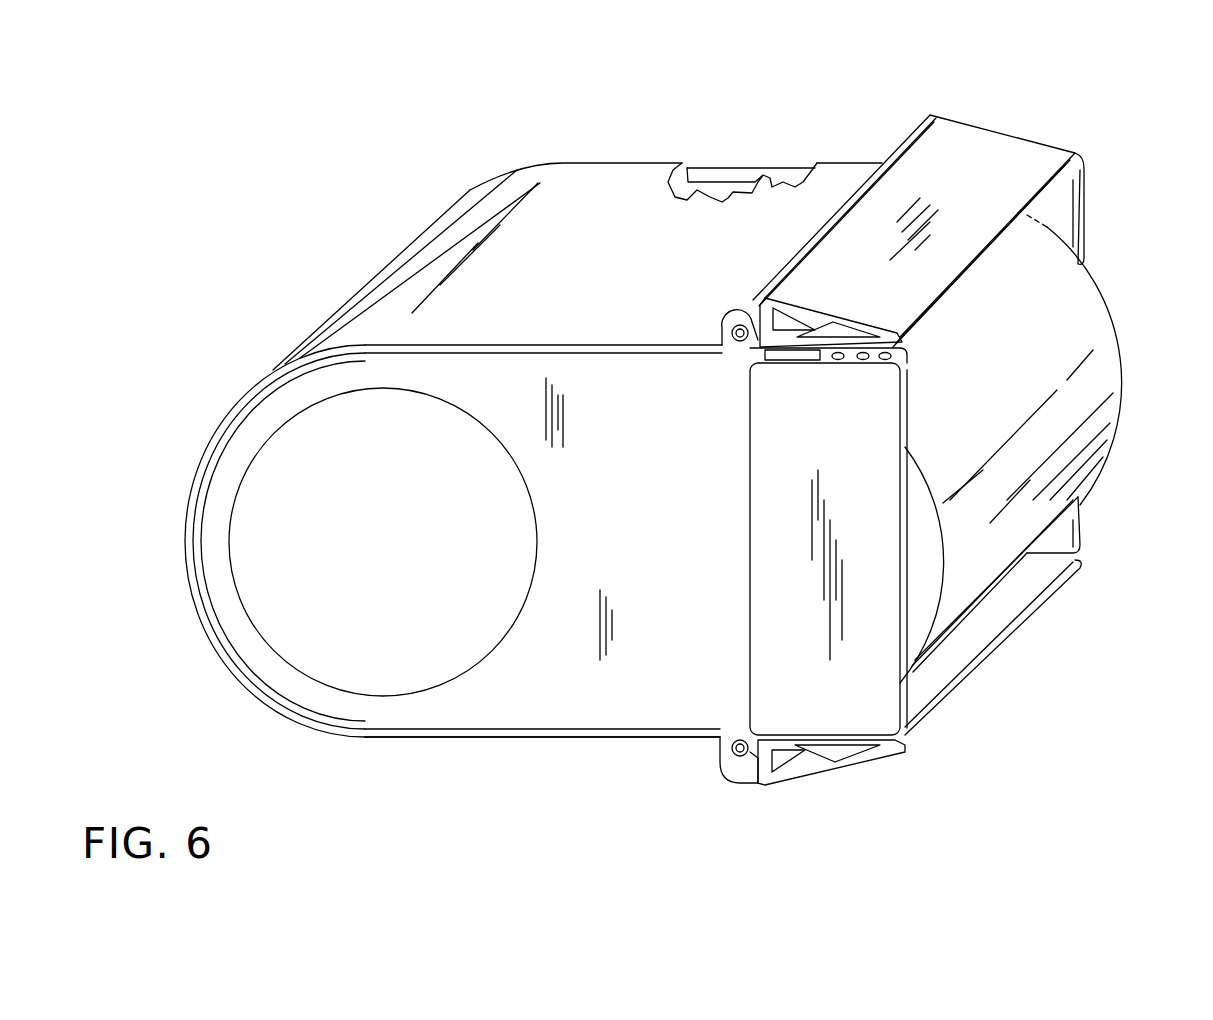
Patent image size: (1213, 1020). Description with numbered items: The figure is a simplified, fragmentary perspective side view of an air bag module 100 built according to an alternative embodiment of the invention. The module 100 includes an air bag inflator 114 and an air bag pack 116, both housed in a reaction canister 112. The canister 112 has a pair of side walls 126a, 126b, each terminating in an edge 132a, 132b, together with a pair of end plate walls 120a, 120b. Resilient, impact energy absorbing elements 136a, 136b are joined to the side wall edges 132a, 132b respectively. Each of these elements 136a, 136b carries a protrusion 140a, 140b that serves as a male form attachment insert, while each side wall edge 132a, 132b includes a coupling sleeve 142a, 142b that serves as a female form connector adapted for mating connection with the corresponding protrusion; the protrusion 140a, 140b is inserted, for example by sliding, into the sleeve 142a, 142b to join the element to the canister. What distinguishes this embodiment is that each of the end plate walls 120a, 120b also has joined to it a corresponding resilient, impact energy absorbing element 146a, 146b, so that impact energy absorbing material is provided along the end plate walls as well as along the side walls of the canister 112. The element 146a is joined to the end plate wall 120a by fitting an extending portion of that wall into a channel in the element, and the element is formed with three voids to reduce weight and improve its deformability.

The air bag module 100 is at (306, 205).
The reaction canister 112 is at (563, 152).
The air bag inflator 114 is at (395, 549).
The air bag pack 116 is at (1085, 330).
The end plate wall 120a is at (648, 549).
The end plate wall 120b is at (777, 172).
The side wall 126a is at (527, 740).
The side wall 126b is at (586, 276).
The side wall edge 132a is at (740, 735).
The side wall edge 132b is at (745, 350).
The impact energy absorbing element 136a is at (1015, 610).
The impact energy absorbing element 136b is at (990, 145).
The protrusion 140a is at (742, 757).
The protrusion 140b is at (742, 328).
The coupling sleeve 142a is at (722, 755).
The coupling sleeve 142b is at (725, 325).
The impact energy absorbing element 146a is at (880, 700).
The impact energy absorbing element 146b is at (1070, 537).